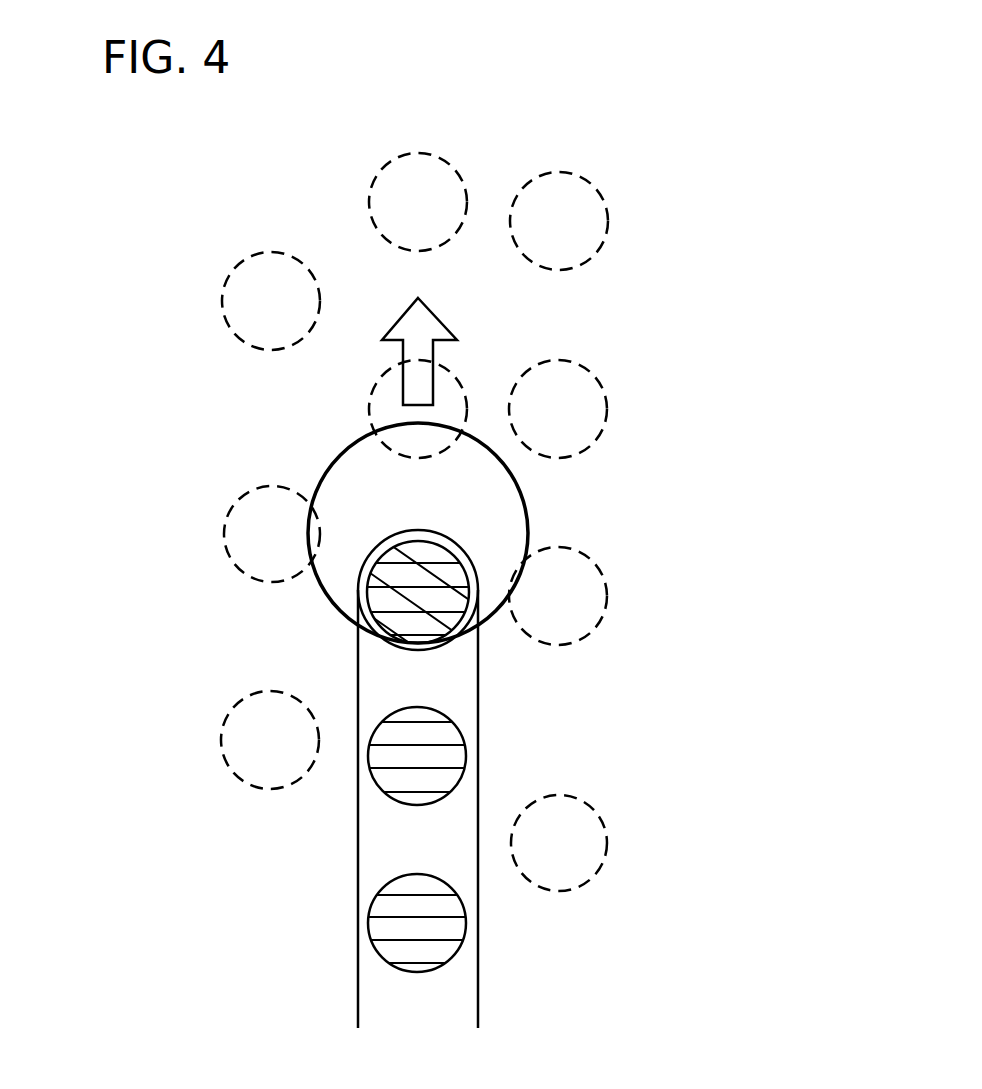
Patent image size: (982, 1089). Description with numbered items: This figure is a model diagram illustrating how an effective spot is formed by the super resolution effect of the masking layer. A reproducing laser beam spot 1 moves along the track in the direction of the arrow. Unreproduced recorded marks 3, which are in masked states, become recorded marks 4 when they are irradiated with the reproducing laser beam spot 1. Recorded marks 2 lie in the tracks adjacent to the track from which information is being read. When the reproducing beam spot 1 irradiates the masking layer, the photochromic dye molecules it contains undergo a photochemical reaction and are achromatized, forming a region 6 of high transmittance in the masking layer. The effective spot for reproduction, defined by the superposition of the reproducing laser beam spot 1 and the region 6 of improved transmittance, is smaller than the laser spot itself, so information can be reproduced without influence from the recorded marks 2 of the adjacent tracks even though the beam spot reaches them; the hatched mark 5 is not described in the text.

The reproducing laser beam spot 1 is at (527, 513).
The recorded marks 2 is at (240, 338).
The unreproduced recorded marks 3 is at (467, 217).
The recorded marks 4 is at (447, 882).
The magnet in active position 5 is at (372, 626).
The region having high transmittance 6 is at (478, 995).